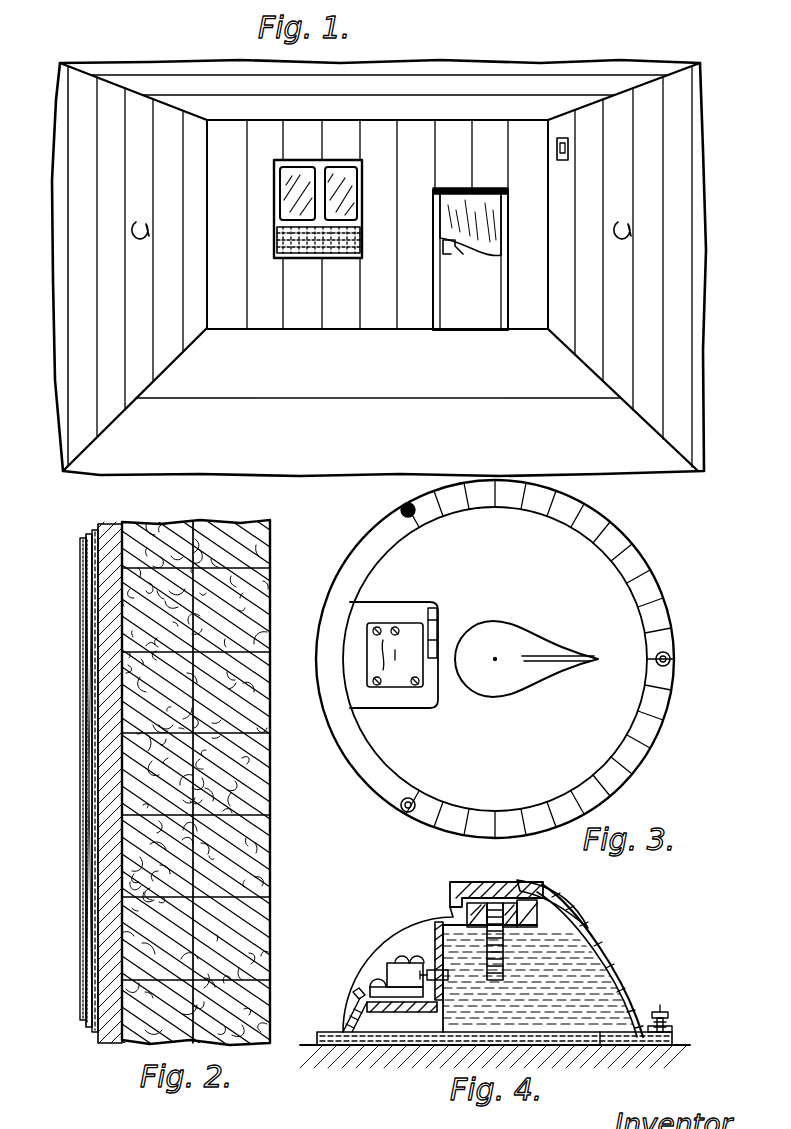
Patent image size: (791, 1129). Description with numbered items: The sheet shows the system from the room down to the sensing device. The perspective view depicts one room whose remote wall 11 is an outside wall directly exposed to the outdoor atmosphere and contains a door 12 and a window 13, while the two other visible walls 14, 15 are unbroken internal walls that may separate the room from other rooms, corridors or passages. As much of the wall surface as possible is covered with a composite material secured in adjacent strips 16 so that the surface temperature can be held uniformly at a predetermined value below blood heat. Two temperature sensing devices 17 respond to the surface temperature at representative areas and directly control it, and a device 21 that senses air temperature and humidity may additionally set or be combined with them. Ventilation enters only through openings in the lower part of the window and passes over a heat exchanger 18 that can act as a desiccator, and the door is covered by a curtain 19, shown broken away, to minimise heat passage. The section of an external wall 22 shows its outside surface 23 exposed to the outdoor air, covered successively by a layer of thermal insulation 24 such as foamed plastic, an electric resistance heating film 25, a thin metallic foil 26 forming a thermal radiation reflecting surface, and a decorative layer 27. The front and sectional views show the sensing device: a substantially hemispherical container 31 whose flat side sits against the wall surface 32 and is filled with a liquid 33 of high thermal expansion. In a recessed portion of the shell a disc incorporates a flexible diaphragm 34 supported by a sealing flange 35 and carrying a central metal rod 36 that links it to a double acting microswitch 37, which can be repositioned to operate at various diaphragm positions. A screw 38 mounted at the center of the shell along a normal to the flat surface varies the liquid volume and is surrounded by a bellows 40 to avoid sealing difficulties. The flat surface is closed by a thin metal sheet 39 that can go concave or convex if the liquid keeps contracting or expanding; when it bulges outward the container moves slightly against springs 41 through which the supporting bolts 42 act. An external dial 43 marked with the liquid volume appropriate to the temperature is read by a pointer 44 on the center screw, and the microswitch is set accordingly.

In FIG. 1, the remote wall 11 is at (390, 241).
In FIG. 1, the door 12 is at (486, 317).
In FIG. 1, the window 13 is at (338, 178).
In FIG. 1, the wall 14 is at (123, 342).
In FIG. 1, the wall 15 is at (633, 312).
In FIG. 1, the strips 16 is at (303, 137).
In FIG. 1, the temperature sensing devices 17 is at (145, 237).
In FIG. 1, the heat exchanger 18 is at (311, 253).
In FIG. 1, the curtain 19 is at (497, 240).
In FIG. 1, the device 21 is at (563, 160).
In FIG. 2, the wall 22 is at (270, 768).
In FIG. 2, the outside surface 23 is at (270, 862).
In FIG. 2, the layer of thermal insulation 24 is at (108, 600).
In FIG. 2, the heating film 25 is at (97, 684).
In FIG. 2, the metallic foil 26 is at (90, 770).
In FIG. 2, the decorative layer 27 is at (85, 884).
In FIG. 3, the container 31 is at (549, 764).
In FIG. 4, the container 31 is at (620, 980).
In FIG. 4, the wall surface 32 is at (312, 1050).
In FIG. 4, the liquid 33 is at (618, 1046).
In FIG. 4, the flexible diaphragm 34 is at (437, 950).
In FIG. 4, the sealing flange 35 is at (428, 1016).
In FIG. 4, the metal rod 36 is at (428, 970).
In FIG. 3, the double acting microswitch 37 is at (385, 650).
In FIG. 4, the double acting microswitch 37 is at (395, 975).
In FIG. 4, the screw 38 is at (503, 892).
In FIG. 4, the thin metal sheet 39 is at (607, 1020).
In FIG. 4, the bellows 40 is at (540, 957).
In FIG. 4, the springs 41 is at (672, 1030).
In FIG. 3, the supporting bolts 42 is at (401, 510).
In FIG. 4, the supporting bolts 42 is at (666, 1008).
In FIG. 4, the external dial 43 is at (330, 1034).
In FIG. 3, the pointer 44 is at (555, 657).
In FIG. 4, the pointer 44 is at (575, 918).